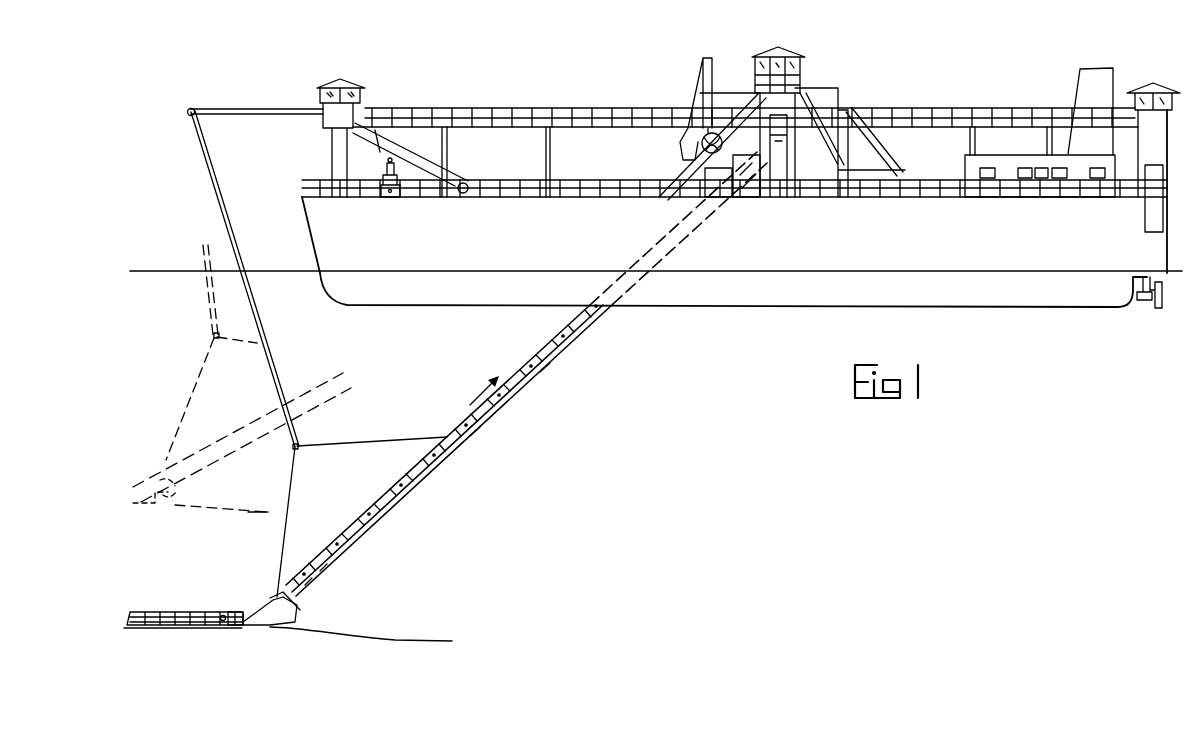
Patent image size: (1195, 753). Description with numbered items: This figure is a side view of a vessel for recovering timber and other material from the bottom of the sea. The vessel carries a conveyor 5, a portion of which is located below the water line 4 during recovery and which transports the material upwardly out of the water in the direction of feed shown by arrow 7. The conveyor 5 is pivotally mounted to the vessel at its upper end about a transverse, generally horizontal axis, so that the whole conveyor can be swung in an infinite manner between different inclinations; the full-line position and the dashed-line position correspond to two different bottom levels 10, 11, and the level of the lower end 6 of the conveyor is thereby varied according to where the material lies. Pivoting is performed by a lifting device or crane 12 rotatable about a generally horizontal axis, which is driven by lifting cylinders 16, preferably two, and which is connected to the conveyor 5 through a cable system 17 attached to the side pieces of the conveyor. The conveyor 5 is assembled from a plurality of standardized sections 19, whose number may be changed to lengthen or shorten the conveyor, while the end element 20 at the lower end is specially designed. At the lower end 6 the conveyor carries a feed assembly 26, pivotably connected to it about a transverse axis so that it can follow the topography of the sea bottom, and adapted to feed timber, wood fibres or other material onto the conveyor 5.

The water line 4 is at (287, 274).
The conveyor 5 is at (437, 474).
The lower end of the conveyor 6 is at (288, 605).
The arrow indicating direction of feed 7 is at (480, 398).
The bottom level 10 is at (428, 641).
The bottom level 11 is at (253, 515).
The lifting device or crane 12 is at (249, 104).
The lifting cylinders 16 is at (385, 167).
The cable system 17 is at (278, 362).
The sections 19 is at (559, 347).
The end element 20 is at (303, 582).
The feed assembly 26 is at (183, 608).